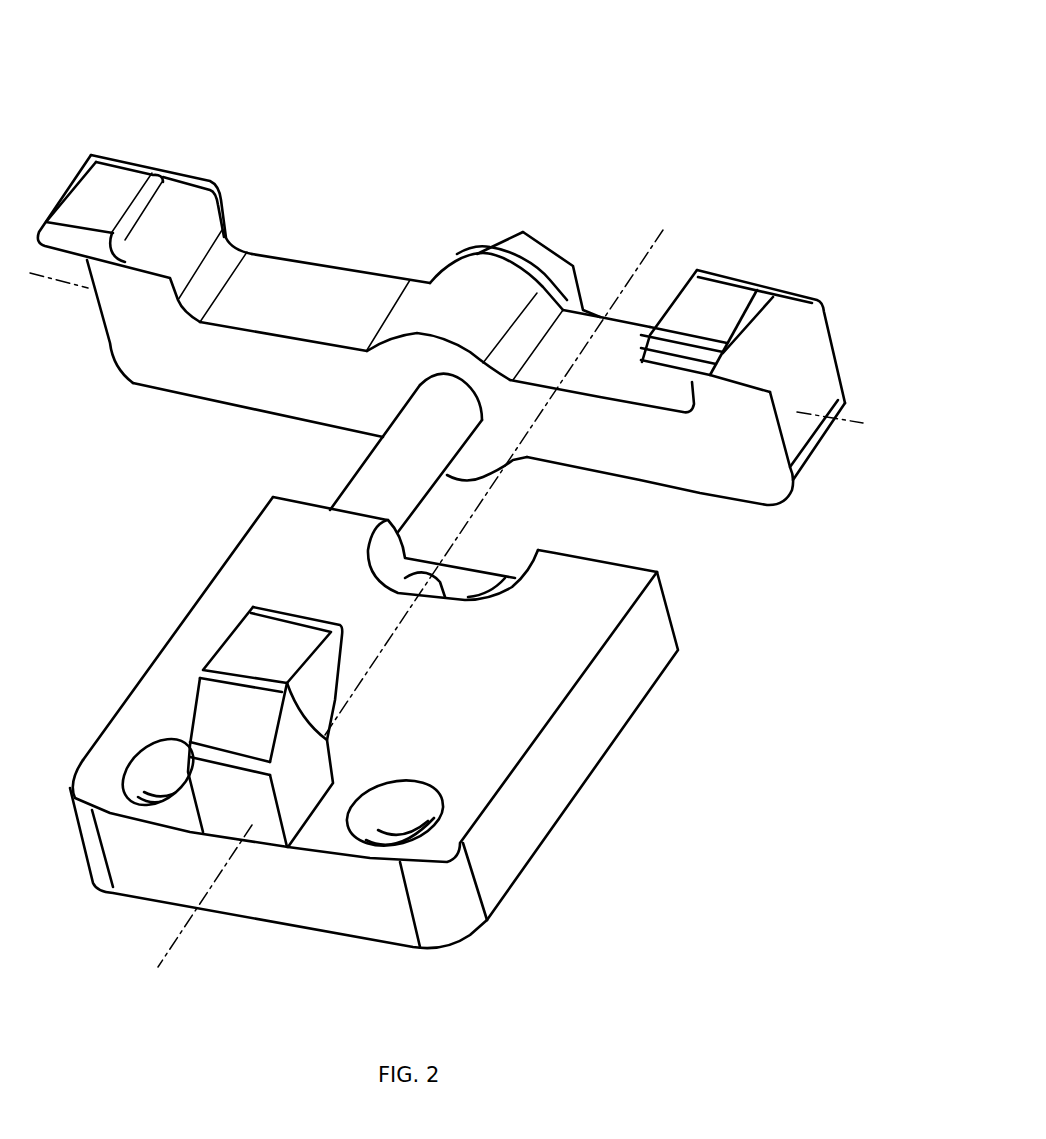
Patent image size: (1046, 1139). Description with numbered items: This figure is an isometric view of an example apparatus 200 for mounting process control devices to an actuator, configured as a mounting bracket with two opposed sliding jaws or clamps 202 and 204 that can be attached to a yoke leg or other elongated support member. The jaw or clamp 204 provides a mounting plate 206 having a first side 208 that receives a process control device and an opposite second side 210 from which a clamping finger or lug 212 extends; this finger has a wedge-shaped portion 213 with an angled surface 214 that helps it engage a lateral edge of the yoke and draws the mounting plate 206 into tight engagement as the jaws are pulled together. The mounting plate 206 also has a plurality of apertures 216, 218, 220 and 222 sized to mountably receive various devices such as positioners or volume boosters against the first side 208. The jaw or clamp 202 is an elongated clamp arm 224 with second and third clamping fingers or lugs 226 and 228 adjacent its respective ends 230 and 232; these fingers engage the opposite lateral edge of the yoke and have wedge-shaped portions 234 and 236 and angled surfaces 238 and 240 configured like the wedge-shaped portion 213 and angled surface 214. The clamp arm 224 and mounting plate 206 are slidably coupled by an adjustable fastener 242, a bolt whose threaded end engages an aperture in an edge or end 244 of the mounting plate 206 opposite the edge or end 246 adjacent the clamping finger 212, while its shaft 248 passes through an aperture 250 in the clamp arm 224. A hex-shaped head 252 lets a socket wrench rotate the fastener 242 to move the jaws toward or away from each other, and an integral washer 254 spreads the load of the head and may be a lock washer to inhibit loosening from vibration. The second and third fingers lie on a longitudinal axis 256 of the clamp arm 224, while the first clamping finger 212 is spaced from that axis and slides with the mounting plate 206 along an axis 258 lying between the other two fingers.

The apparatus 200 is at (702, 52).
The jaw or clamp 202 is at (147, 117).
The jaw or clamp 204 is at (628, 792).
The mounting plate 206 is at (600, 687).
The first side 208 is at (507, 900).
The second side 210 is at (365, 679).
The clamping finger or lug 212 is at (260, 643).
The wedge-shaped portion 213 is at (303, 741).
The angled surface 214 is at (330, 697).
The aperture 216 is at (417, 797).
The aperture 218 is at (147, 768).
The aperture 220 is at (438, 568).
The aperture 222 is at (503, 580).
The elongated clamp arm 224 is at (267, 285).
The second clamping finger or lug 226 is at (727, 297).
The third clamping finger or lug 228 is at (113, 190).
The end 230 is at (753, 480).
The end 232 is at (130, 353).
The wedge-shaped portion 234 is at (735, 361).
The wedge-shaped portion 236 is at (142, 257).
The angled surface 238 is at (720, 375).
The angled surface 240 is at (88, 283).
The adjustable fastener 242 is at (373, 477).
The edge or end 244 is at (278, 497).
The edge or end 246 is at (147, 857).
The shaft 248 is at (428, 458).
The aperture 250 is at (473, 400).
The hex-shaped head 252 is at (537, 262).
The integral washer 254 is at (480, 253).
The longitudinal axis 256 is at (855, 415).
The axis 258 is at (663, 232).